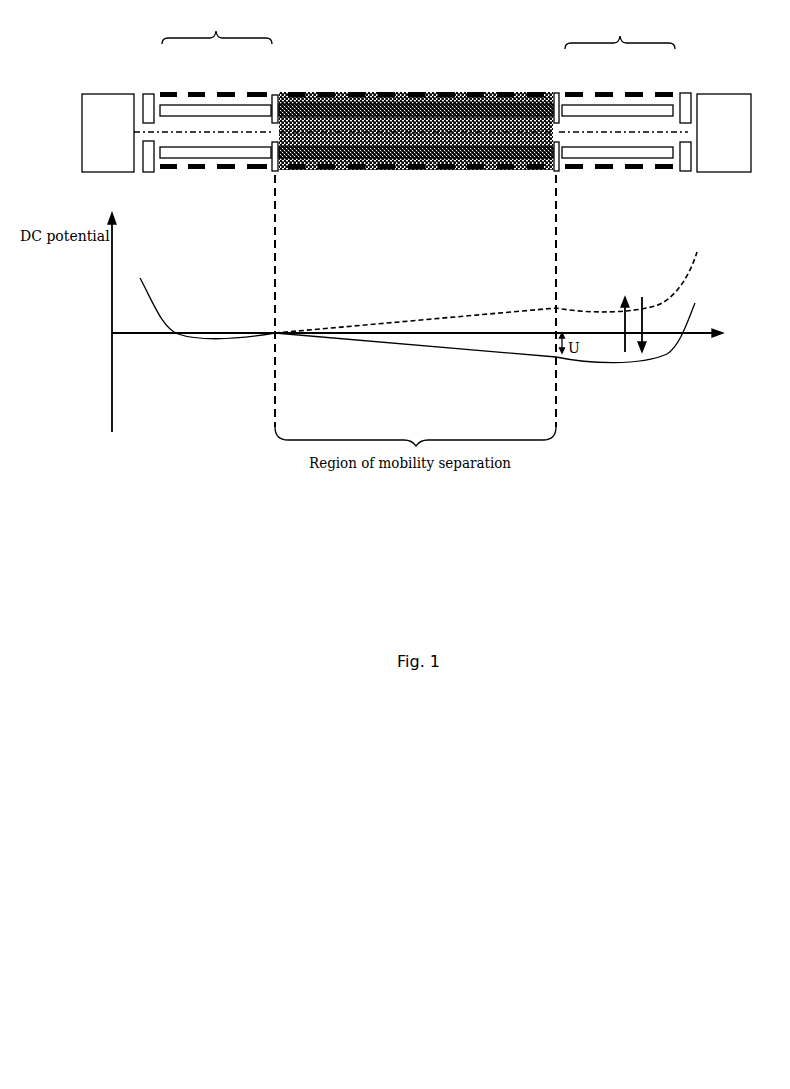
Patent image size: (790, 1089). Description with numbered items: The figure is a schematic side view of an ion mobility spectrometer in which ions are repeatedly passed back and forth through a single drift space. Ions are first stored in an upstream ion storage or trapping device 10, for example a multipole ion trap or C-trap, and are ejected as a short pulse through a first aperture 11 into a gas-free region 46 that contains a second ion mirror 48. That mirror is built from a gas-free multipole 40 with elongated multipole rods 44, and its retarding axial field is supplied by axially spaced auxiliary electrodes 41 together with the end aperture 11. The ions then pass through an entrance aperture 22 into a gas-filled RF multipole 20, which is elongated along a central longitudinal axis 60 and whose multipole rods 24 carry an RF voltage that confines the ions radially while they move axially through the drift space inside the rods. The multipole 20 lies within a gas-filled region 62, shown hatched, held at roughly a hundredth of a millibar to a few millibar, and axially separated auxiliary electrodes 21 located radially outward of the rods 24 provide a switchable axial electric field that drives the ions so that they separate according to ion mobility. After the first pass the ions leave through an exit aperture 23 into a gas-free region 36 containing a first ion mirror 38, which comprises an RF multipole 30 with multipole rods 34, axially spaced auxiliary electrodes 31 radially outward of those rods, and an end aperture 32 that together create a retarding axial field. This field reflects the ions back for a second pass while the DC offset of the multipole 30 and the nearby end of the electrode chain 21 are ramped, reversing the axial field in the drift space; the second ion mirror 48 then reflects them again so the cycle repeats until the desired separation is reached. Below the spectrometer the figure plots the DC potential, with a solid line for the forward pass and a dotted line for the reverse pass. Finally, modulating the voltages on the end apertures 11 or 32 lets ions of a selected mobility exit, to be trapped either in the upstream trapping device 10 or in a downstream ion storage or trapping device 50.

The ion storage or trapping device 10 is at (95, 93).
The first aperture 11 is at (148, 93).
The second ion mirror 48 is at (217, 25).
The gas-free multipole 40 is at (193, 88).
The auxiliary electrodes 41 is at (235, 92).
The multipole rods 44 is at (214, 104).
The gas-free region 46 is at (187, 142).
The entrance aperture 22 is at (280, 95).
The gas-filled RF multipole 20 is at (372, 81).
The multipole rods 24 is at (343, 106).
The auxiliary electrodes 21 is at (470, 90).
The central longitudinal axis 60 is at (397, 130).
The gas-filled region 62 is at (485, 125).
The exit aperture 23 is at (556, 92).
The first ion mirror 38 is at (620, 33).
The RF multipole 30 is at (597, 84).
The auxiliary electrodes 31 is at (643, 92).
The multipole rods 34 is at (618, 104).
The gas-free region 36 is at (586, 140).
The end aperture 32 is at (685, 92).
The ion storage or trapping device 50 is at (724, 112).